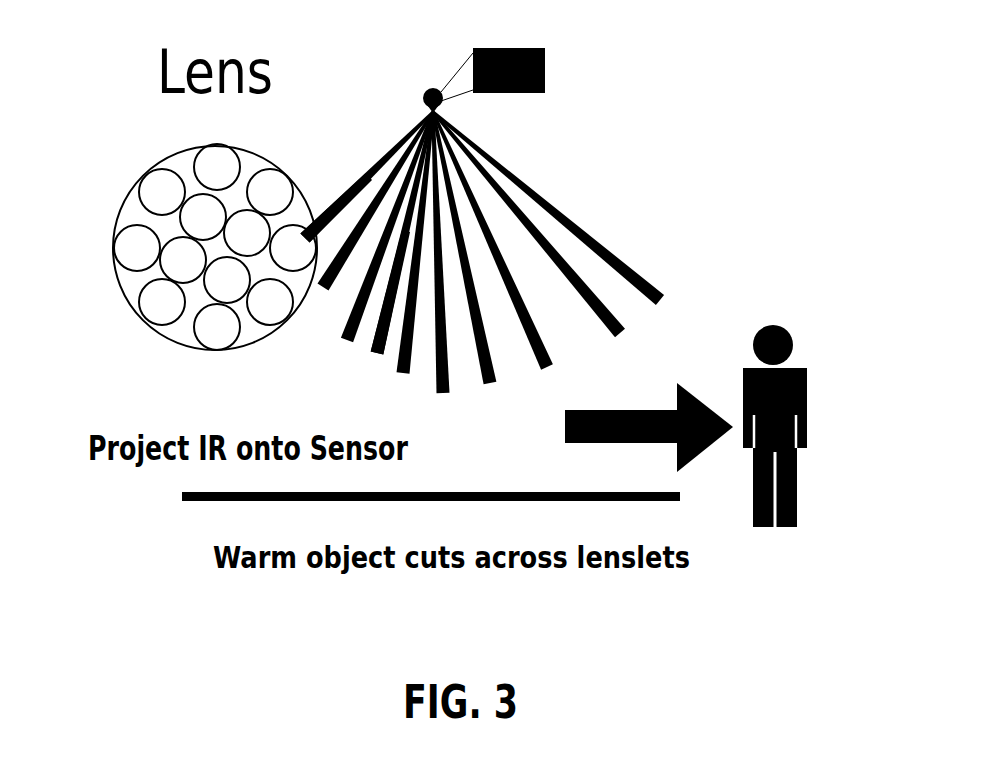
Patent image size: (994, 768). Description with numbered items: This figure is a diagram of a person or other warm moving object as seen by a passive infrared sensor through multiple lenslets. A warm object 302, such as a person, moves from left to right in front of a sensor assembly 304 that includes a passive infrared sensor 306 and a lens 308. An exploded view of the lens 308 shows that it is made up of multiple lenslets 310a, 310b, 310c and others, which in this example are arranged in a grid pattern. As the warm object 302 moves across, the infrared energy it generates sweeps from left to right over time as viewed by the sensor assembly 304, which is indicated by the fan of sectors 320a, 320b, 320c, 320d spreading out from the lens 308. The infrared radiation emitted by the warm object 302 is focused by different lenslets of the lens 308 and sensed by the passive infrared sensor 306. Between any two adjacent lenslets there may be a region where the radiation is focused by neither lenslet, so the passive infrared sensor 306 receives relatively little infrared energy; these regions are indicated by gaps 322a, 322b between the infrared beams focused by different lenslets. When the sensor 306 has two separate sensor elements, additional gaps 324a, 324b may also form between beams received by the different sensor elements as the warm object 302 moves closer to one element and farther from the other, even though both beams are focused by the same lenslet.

The warm object 302 is at (807, 372).
The sensor assembly 304 is at (433, 26).
The passive infrared sensor 306 is at (535, 47).
The lens 308 is at (428, 88).
The lenslet 310a is at (148, 188).
The lenslet 310b is at (128, 252).
The lenslet 310c is at (155, 302).
The sector 320a is at (372, 175).
The sector 320b is at (407, 157).
The sector 320c is at (352, 327).
The sector 320d is at (410, 335).
The gap 322a is at (392, 197).
The gap 322b is at (432, 315).
The additional gap 324a is at (350, 212).
The additional gap 324b is at (383, 313).